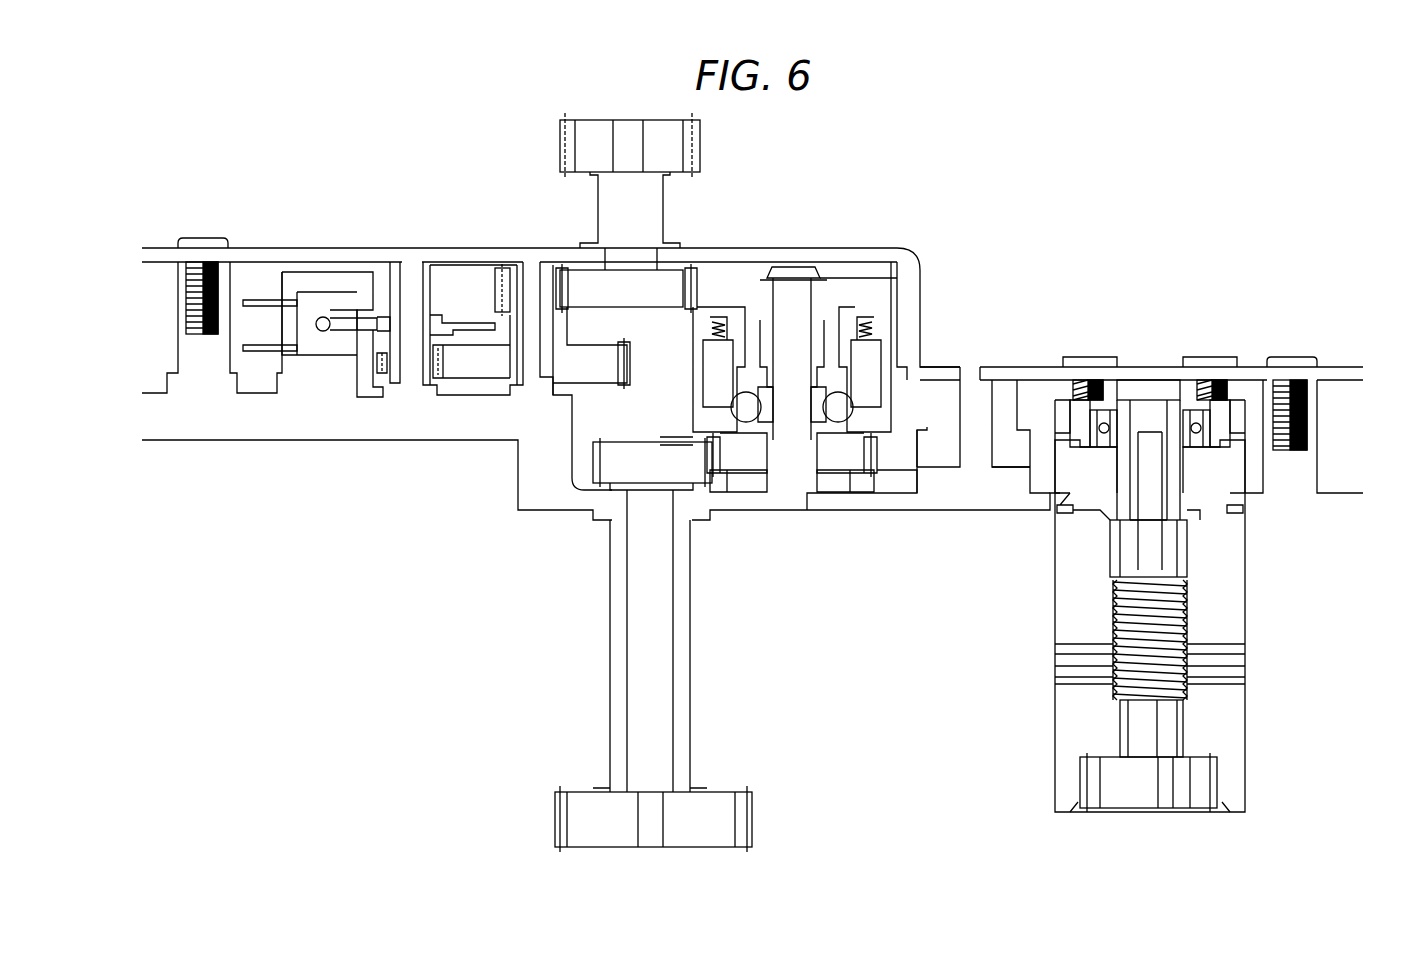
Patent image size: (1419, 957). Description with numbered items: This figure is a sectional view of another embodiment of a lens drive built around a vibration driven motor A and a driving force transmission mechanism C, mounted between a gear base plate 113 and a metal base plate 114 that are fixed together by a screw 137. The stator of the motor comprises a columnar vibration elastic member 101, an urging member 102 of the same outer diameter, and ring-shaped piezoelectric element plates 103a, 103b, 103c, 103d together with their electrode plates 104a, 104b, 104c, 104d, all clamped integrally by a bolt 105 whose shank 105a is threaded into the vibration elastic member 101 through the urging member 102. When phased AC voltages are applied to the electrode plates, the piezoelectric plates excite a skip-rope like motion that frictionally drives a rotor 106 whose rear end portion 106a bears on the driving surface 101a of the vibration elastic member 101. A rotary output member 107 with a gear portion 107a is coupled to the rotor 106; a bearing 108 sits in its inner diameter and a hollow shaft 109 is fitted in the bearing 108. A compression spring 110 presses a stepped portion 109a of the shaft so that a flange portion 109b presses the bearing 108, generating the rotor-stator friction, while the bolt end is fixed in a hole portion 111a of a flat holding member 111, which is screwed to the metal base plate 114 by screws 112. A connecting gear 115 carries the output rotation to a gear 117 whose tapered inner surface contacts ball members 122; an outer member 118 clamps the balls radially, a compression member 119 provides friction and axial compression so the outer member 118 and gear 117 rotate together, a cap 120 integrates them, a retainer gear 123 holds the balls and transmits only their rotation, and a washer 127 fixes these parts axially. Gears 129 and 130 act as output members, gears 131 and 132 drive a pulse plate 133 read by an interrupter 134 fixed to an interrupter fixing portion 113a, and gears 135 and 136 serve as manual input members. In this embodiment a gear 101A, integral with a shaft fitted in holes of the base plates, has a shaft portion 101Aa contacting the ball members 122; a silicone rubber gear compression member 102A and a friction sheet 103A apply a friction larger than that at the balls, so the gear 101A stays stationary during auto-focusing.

The vibration elastic member 101 is at (1065, 620).
The driving surface 101a is at (1185, 512).
The gear 101A is at (845, 480).
The shaft portion 101Aa is at (778, 410).
The urging member 102 is at (1062, 745).
The gear compression member 102A is at (830, 475).
The piezoelectric element plate 103a is at (1057, 648).
The piezoelectric element plate 103b is at (1057, 658).
The piezoelectric element plate 103c is at (1057, 670).
The piezoelectric element plate 103d is at (1057, 682).
The friction sheet 103A is at (835, 482).
The electrode plate 104a is at (1245, 648).
The electrode plate 104b is at (1245, 658).
The electrode plate 104c is at (1245, 668).
The electrode plate 104d is at (1245, 680).
The bolt 105 is at (1168, 800).
The bolt shank 105a is at (1148, 395).
The rotor 106 is at (1060, 460).
The rear end portion 106a is at (1065, 520).
The rotary output member 107 is at (1085, 405).
The gear portion 107a is at (1075, 417).
The bearing 108 is at (1203, 432).
The hollow shaft 109 is at (1190, 505).
The stepped portion 109a is at (1125, 515).
The flange portion 109b is at (1215, 370).
The compression spring 110 is at (1185, 410).
The holding member 111 is at (1117, 387).
The hole portion 111a is at (1155, 392).
The screw 112 is at (1085, 366).
The gear base plate 113 is at (990, 492).
The interrupter fixing portion 113a is at (330, 290).
The metal base plate 114 is at (950, 376).
The connecting gear 115 is at (942, 462).
The gear 117 is at (868, 392).
The outer member 118 is at (893, 366).
The compression member 119 is at (860, 350).
The cap 120 is at (872, 365).
The ball members 122 is at (730, 405).
The retainer gear 123 is at (830, 290).
The washer 127 is at (810, 270).
The gear 129 is at (583, 290).
The gear 130 is at (580, 150).
The gear 131 is at (500, 305).
The gear 132 is at (382, 300).
The pulse plate 133 is at (367, 370).
The interrupter 134 is at (325, 292).
The gear 135 is at (615, 465).
The gear 136 is at (580, 817).
The screw 137 is at (207, 246).